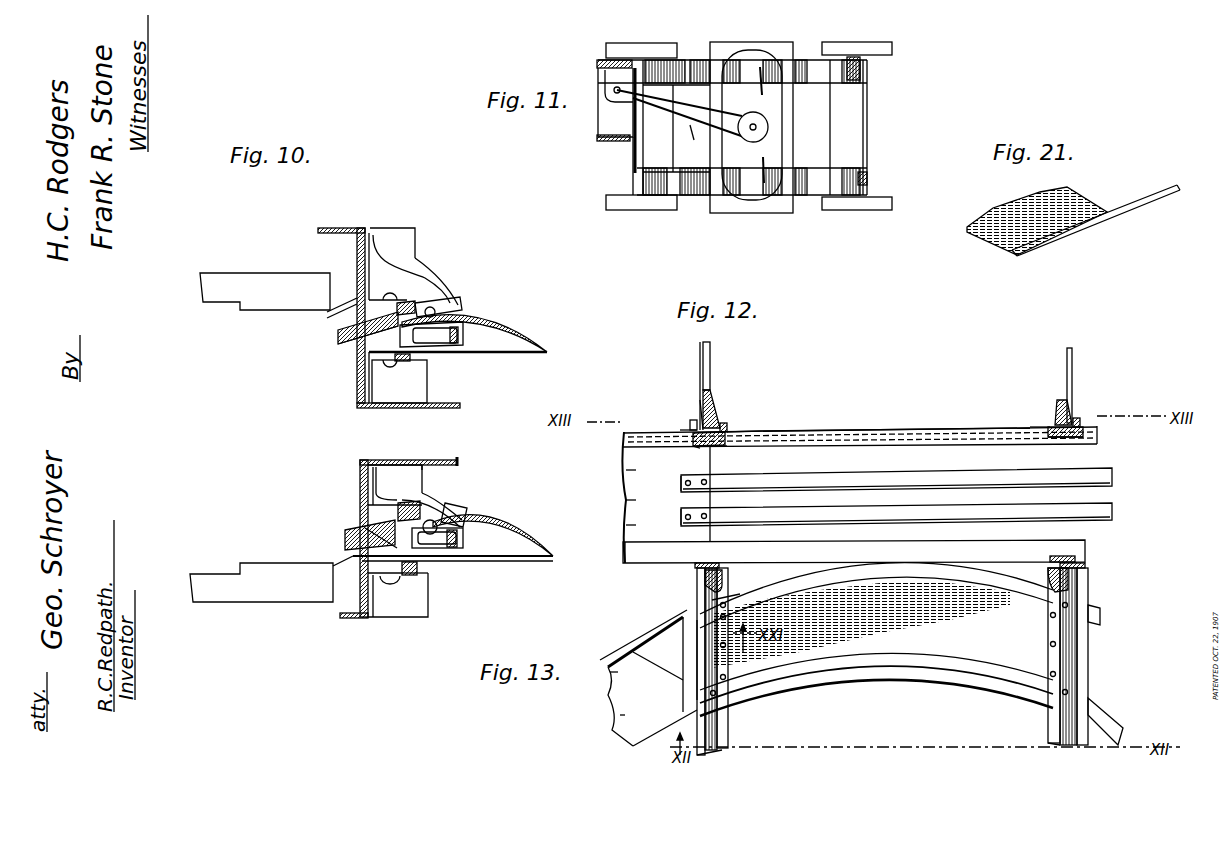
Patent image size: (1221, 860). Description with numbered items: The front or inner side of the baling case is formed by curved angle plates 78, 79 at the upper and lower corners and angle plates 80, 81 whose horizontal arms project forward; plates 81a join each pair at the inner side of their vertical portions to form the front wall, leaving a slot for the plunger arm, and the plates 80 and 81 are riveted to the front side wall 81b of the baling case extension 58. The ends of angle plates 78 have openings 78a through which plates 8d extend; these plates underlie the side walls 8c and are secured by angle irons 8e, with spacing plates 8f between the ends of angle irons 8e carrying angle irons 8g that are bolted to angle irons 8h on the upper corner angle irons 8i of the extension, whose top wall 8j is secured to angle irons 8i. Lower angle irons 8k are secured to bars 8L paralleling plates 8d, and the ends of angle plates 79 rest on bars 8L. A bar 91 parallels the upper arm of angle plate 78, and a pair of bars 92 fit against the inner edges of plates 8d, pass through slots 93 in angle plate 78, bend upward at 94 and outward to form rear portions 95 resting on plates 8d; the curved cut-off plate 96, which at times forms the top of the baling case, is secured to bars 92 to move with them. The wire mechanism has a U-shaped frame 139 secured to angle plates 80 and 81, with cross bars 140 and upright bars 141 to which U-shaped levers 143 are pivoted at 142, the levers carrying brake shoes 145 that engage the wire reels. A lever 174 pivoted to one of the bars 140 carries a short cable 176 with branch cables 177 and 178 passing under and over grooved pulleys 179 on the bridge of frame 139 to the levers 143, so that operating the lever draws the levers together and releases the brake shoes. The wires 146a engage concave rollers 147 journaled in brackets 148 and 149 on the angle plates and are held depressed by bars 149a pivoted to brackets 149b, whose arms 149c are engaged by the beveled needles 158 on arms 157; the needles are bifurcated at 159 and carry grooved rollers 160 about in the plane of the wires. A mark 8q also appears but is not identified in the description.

In FIG. 12, the baling case extension 58 is at (637, 502).
In FIG. 13, the baling case extension 58 is at (648, 678).
In FIG. 10, the upper corner angle plate 78 is at (417, 245).
In FIG. 12, the upper corner angle plate 78 is at (880, 430).
In FIG. 13, the upper corner angle plate 78 is at (888, 658).
In FIG. 12, the openings 78a is at (730, 440).
In FIG. 10, the lower corner angle plate 79 is at (420, 612).
In FIG. 12, the lower corner angle plate 79 is at (854, 545).
In FIG. 10, the upper angle plate 80 is at (410, 447).
In FIG. 12, the upper angle plate 80 is at (896, 472).
In FIG. 13, the upper angle plate 80 is at (935, 679).
In FIG. 10, the lower angle plate 81 is at (442, 458).
In FIG. 12, the lower angle plate 81 is at (896, 508).
In FIG. 10, the front wall plates 81a is at (357, 300).
In FIG. 12, the front wall plates 81a is at (824, 497).
In FIG. 12, the front side wall of baling case extension 81b is at (645, 524).
In FIG. 12, the side walls 8c is at (701, 355).
In FIG. 12, the plates 8d is at (697, 448).
In FIG. 13, the plates 8d is at (787, 747).
In FIG. 12, the angle irons 8e is at (702, 415).
In FIG. 13, the angle irons 8e is at (700, 597).
In FIG. 12, the spacing plates 8f is at (635, 476).
In FIG. 12, the angle irons 8g is at (700, 425).
In FIG. 13, the angle irons 8g is at (697, 650).
In FIG. 12, the angle irons 8h is at (690, 425).
In FIG. 13, the angle irons 8h is at (683, 665).
In FIG. 12, the corner angle irons 8i is at (625, 432).
In FIG. 13, the corner angle irons 8i is at (604, 711).
In FIG. 13, the top wall 8j is at (611, 706).
In FIG. 12, the lower angle irons 8k is at (622, 555).
In FIG. 13, the bars 8L is at (695, 568).
In FIG. 12, the bracket 8q is at (712, 415).
In FIG. 13, the bar 91 is at (853, 576).
In FIG. 12, the bars 92 is at (718, 436).
In FIG. 13, the bars 92 is at (722, 727).
In FIG. 21, the bars 92 is at (1145, 213).
In FIG. 12, the slots 93 is at (723, 444).
In FIG. 12, the upward bends 94 is at (720, 432).
In FIG. 13, the upward bends 94 is at (712, 598).
In FIG. 12, the rear portions 95 is at (723, 425).
In FIG. 13, the rear portions 95 is at (710, 582).
In FIG. 12, the cut-off plate 96 is at (833, 430).
In FIG. 13, the cut-off plate 96 is at (861, 625).
In FIG. 21, the cut-off plate 96 is at (1005, 248).
In FIG. 11, the U-shaped frame 139 is at (745, 42).
In FIG. 11, the cross bars 140 is at (830, 80).
In FIG. 11, the upright bars 141 is at (866, 135).
In FIG. 11, the pivots 142 is at (866, 70).
In FIG. 11, the U-shaped levers 143 is at (803, 60).
In FIG. 11, the brake shoes 145 is at (607, 45).
In FIG. 10, the wires 146a is at (385, 336).
In FIG. 10, the rollers 147 is at (413, 303).
In FIG. 10, the brackets 148 is at (368, 283).
In FIG. 10, the brackets 149 is at (369, 375).
In FIG. 10, the pivoted bars 149a is at (350, 334).
In FIG. 10, the brackets 149b is at (420, 268).
In FIG. 10, the laterally projecting arms 149c is at (462, 303).
In FIG. 10, the arms 157 is at (220, 278).
In FIG. 10, the needles 158 is at (477, 435).
In FIG. 10, the bifurcations 159 is at (460, 330).
In FIG. 10, the grooved rollers 160 is at (452, 347).
In FIG. 11, the lever 174 is at (600, 66).
In FIG. 11, the short cable 176 is at (617, 92).
In FIG. 11, the branch cable 177 is at (694, 140).
In FIG. 11, the branch cable 178 is at (693, 110).
In FIG. 11, the grooved pulleys 179 is at (758, 128).